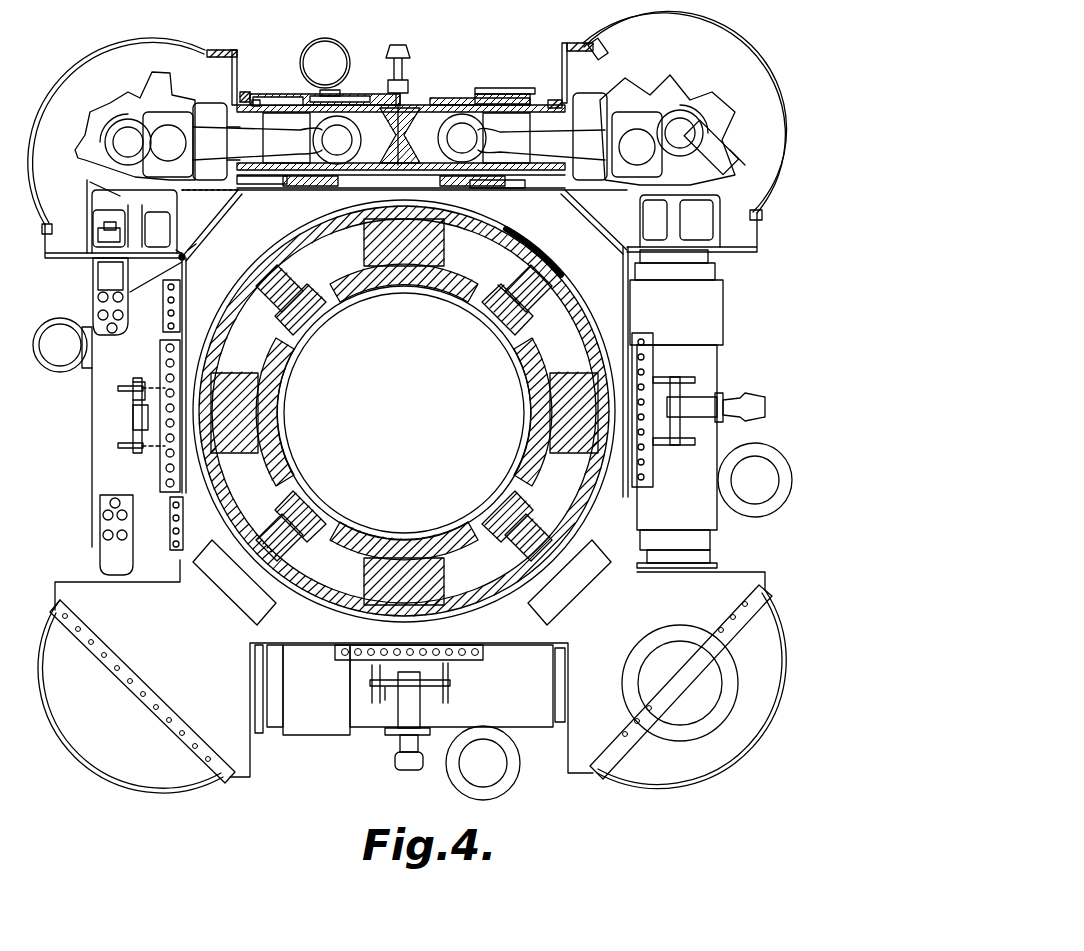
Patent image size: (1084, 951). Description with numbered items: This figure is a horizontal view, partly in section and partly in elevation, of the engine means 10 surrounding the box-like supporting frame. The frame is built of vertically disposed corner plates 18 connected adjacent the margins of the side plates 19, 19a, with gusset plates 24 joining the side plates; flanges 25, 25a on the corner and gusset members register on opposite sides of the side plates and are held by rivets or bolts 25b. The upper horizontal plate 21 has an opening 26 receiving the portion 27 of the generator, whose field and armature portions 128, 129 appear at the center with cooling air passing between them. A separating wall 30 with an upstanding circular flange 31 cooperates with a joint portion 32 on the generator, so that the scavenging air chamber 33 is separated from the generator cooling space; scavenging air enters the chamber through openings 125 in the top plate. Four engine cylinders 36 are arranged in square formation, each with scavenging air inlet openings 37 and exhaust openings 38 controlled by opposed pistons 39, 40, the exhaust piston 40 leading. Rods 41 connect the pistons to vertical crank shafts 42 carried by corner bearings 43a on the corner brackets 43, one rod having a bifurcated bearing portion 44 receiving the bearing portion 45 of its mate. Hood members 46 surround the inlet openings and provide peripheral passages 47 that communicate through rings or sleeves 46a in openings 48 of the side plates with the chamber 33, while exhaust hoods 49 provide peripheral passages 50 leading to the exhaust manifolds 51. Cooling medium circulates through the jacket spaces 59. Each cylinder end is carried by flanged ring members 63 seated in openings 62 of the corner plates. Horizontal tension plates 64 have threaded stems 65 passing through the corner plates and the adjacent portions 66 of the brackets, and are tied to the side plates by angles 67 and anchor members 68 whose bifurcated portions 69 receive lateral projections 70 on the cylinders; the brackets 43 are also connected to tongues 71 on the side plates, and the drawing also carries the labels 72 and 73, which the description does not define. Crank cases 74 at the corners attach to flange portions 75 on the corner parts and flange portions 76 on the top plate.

The valve stem 10 is at (387, 42).
The casing 18 is at (236, 66).
The strut 19 is at (236, 210).
The strut 19a is at (190, 262).
The frame 21 is at (250, 742).
The cross member 24 is at (216, 205).
The joint 25 is at (178, 258).
The joint 25a is at (188, 257).
The joint 25b is at (194, 248).
The outer rim 26 is at (292, 608).
The stator yoke 27 is at (295, 240).
The bore ring 30 is at (421, 378).
The segment 31 is at (548, 254).
The slot 32 is at (510, 262).
The bolt strip 33 is at (188, 306).
The housing 36 is at (430, 100).
The cylinder wall 37 is at (470, 98).
The liner 38 is at (360, 96).
The cylinder 39 is at (445, 96).
The cover plate 40 is at (282, 96).
The connecting rod 41 is at (256, 143).
The crankshaft 42 is at (684, 118).
The crank arm 43 is at (722, 155).
The crank arm end 43a is at (738, 150).
The crank pin 44 is at (640, 112).
The piston 45 is at (705, 125).
The cylinder head 46 is at (500, 95).
The cylinder head flange 46a is at (495, 190).
The cover 47 is at (500, 90).
The bearing block 48 is at (462, 188).
The rail 49 is at (300, 188).
The block 50 is at (320, 188).
The pipe 51 is at (333, 40).
The plate 59 is at (320, 92).
The bolt 62 is at (250, 89).
The end wall 63 is at (556, 100).
The bolt strip 64 is at (92, 462).
The pedestal 65 is at (100, 228).
The terminal box 66 is at (93, 282).
The nut 67 is at (150, 328).
The bracket 68 is at (130, 375).
The lever 69 is at (133, 440).
The actuator 70 is at (690, 400).
The strut 71 is at (598, 195).
The cylinder body 72 is at (130, 458).
The bolt strip 73 is at (670, 365).
The dome 74 is at (90, 780).
The lug 75 is at (596, 42).
The plate 76 is at (197, 742).
The block 125 is at (238, 598).
The interpole 128 is at (455, 552).
The main pole 129 is at (500, 475).